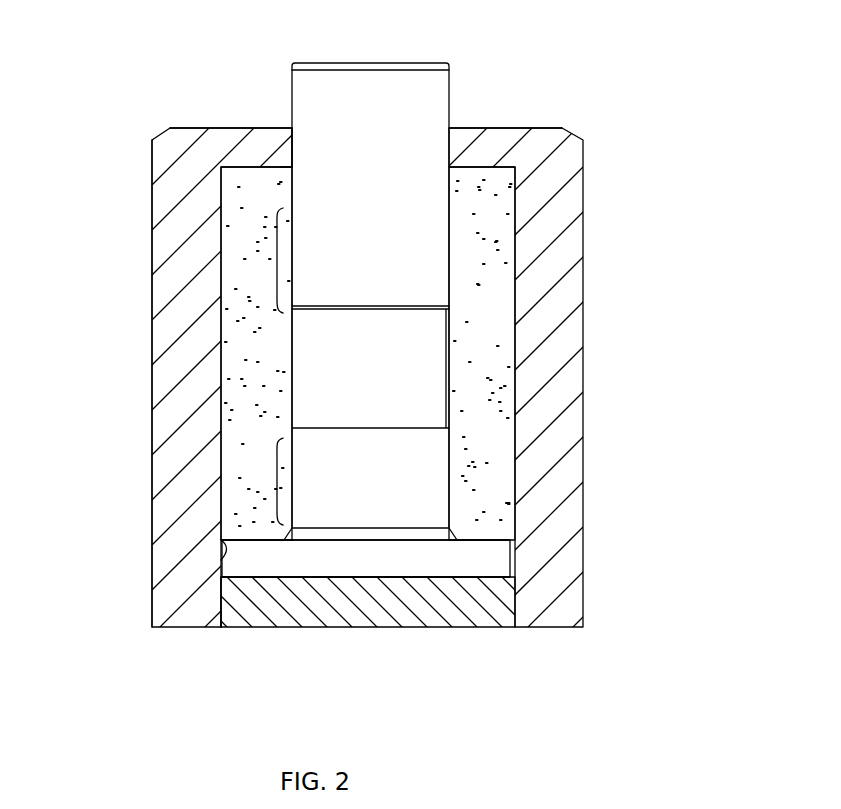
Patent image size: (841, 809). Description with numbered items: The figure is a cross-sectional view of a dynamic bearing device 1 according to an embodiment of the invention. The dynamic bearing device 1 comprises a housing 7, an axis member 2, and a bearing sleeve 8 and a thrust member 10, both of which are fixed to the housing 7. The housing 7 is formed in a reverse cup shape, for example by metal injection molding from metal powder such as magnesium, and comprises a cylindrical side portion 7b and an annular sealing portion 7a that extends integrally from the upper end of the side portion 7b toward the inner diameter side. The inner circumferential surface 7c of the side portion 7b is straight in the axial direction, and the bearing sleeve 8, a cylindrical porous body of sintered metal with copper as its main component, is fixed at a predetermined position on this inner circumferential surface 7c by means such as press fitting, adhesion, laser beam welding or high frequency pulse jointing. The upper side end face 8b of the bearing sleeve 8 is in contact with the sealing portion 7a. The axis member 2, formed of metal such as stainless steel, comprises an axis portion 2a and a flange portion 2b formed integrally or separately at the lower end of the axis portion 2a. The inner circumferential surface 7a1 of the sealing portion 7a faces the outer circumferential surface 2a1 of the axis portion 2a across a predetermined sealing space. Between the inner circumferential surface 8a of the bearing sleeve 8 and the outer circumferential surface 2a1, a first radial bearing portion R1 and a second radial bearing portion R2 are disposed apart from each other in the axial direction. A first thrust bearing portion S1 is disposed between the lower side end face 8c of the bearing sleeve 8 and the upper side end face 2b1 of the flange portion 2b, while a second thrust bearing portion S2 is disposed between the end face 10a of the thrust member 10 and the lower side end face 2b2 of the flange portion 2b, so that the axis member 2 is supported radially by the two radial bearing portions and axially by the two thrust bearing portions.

The dynamic bearing device 1 is at (598, 107).
The axis member 2 is at (455, 85).
The axis portion 2a is at (403, 70).
The outer circumferential surface of the axis portion 2a1 is at (290, 175).
The flange portion 2b is at (500, 557).
The upper side end face of the flange portion 2b1 is at (488, 538).
The lower side end face of the flange portion 2b2 is at (492, 596).
The housing 7 is at (150, 130).
The sealing portion 7a is at (237, 137).
The inner circumferential surface of the sealing portion 7a1 is at (293, 142).
The side portion 7b is at (158, 246).
The inner circumferential surface of the side portion 7c is at (238, 378).
The bearing sleeve 8 is at (583, 156).
The inner circumferential surface of the bearing sleeve 8a is at (441, 241).
The upper side end face of the bearing sleeve 8b is at (490, 160).
The lower side end face of the bearing sleeve 8c is at (222, 548).
The thrust member 10 is at (456, 624).
The end face of the thrust member 10a is at (288, 580).
The first radial bearing portion R1 is at (263, 259).
The second radial bearing portion R2 is at (263, 471).
The first thrust bearing portion S1 is at (259, 539).
The second thrust bearing portion S2 is at (210, 628).